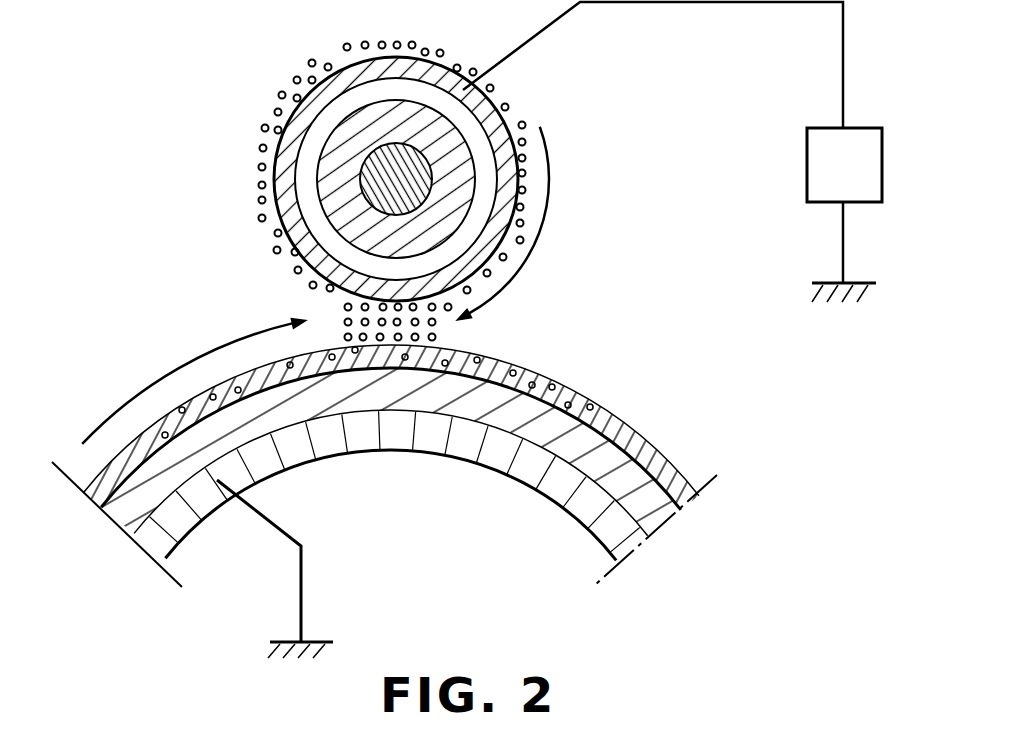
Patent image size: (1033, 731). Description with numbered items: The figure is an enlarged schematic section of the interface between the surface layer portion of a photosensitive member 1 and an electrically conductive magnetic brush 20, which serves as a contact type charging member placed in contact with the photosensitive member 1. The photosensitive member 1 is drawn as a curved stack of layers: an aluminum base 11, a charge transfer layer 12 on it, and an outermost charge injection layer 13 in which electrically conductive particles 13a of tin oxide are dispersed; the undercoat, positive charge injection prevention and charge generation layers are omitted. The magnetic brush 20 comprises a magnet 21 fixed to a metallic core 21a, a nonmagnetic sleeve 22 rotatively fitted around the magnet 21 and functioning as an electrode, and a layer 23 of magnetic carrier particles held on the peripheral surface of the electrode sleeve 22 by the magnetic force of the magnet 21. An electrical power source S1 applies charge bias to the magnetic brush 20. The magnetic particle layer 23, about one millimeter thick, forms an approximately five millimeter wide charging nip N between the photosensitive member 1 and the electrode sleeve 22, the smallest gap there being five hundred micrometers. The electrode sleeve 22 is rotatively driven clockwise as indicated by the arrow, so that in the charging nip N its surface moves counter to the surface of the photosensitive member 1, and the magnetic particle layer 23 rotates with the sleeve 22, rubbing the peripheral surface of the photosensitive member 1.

The photosensitive member 1 is at (643, 400).
The aluminum base 11 is at (148, 548).
The charge transfer layer 12 is at (162, 472).
The charge injection layer 13 is at (193, 407).
The electrically conductive particles 13a is at (236, 387).
The electrically conductive magnetic brush 20 is at (627, 83).
The magnet 21 is at (453, 187).
The metallic core 21a is at (410, 167).
The nonmagnetic sleeve 22 is at (505, 205).
The layer of magnetic particles 23 is at (505, 243).
The charging nip N is at (389, 325).
The electrical power source S1 is at (672, 152).